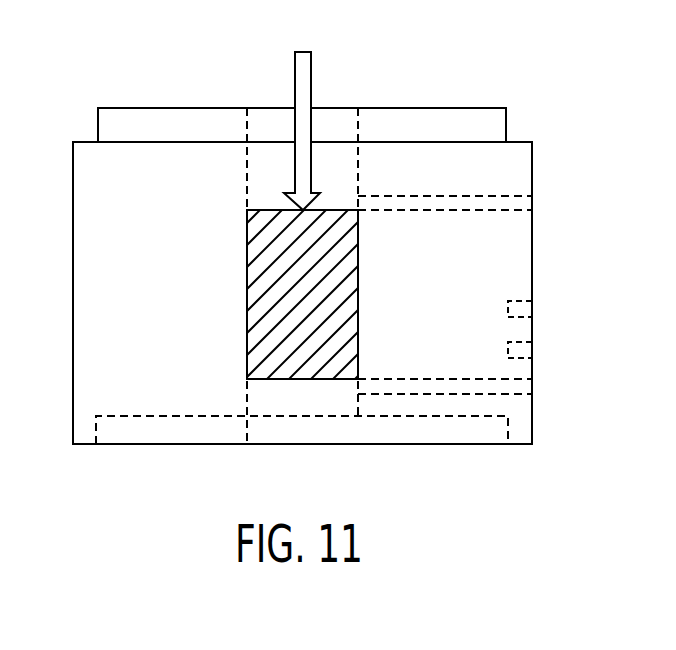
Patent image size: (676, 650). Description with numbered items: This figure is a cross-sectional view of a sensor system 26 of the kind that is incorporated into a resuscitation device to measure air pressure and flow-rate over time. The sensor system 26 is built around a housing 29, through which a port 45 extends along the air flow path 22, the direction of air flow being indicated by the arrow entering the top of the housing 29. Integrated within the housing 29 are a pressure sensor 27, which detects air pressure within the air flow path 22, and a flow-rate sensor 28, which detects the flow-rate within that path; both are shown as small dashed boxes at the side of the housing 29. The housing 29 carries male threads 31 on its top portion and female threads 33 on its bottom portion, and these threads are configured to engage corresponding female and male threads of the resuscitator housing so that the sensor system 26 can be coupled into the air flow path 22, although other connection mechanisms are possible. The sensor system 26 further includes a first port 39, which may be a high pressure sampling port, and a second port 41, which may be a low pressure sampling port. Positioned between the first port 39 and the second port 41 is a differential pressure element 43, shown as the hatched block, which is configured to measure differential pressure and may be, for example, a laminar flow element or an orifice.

The sensor system 26 is at (203, 40).
The air-flow path 22 is at (303, 80).
The male threads 31 is at (506, 123).
The port 45 is at (245, 163).
The first port 39 is at (518, 207).
The housing 29 is at (532, 253).
The differential pressure element 43 is at (358, 275).
The pressure sensor 27 is at (520, 312).
The flow-rate sensor 28 is at (520, 353).
The second port 41 is at (520, 392).
The female threads 33 is at (508, 430).